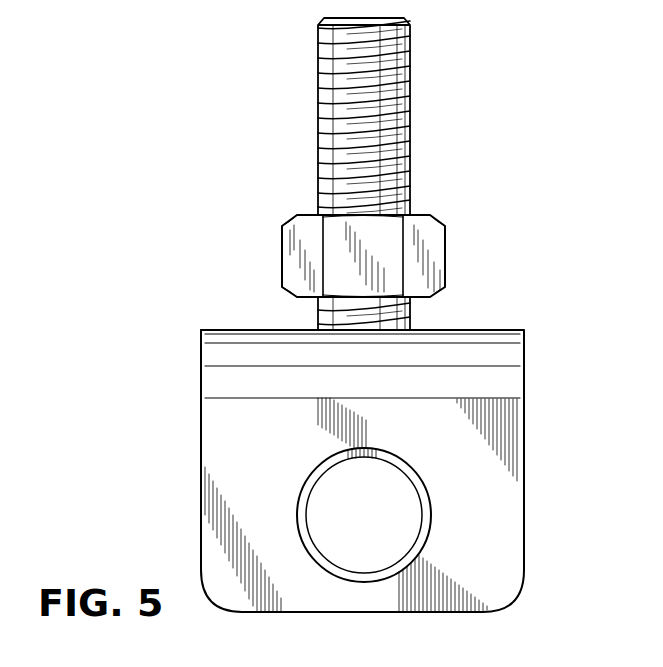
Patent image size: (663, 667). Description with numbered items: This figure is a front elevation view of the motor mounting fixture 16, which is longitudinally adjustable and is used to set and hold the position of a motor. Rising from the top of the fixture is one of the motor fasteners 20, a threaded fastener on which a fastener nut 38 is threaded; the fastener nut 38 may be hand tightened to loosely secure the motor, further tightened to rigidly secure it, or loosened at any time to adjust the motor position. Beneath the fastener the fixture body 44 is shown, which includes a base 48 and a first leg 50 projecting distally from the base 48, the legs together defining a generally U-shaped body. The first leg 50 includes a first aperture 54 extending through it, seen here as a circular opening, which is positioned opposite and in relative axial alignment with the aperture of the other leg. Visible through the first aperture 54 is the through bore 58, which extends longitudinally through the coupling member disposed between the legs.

The motor mounting fixture 16 is at (238, 110).
The motor fastener 20 is at (410, 102).
The fastener nut 38 is at (445, 232).
The fixture body 44 is at (226, 327).
The base 48 is at (470, 329).
The first leg 50 is at (430, 612).
The first aperture 54 is at (358, 576).
The through bore 58 is at (364, 515).